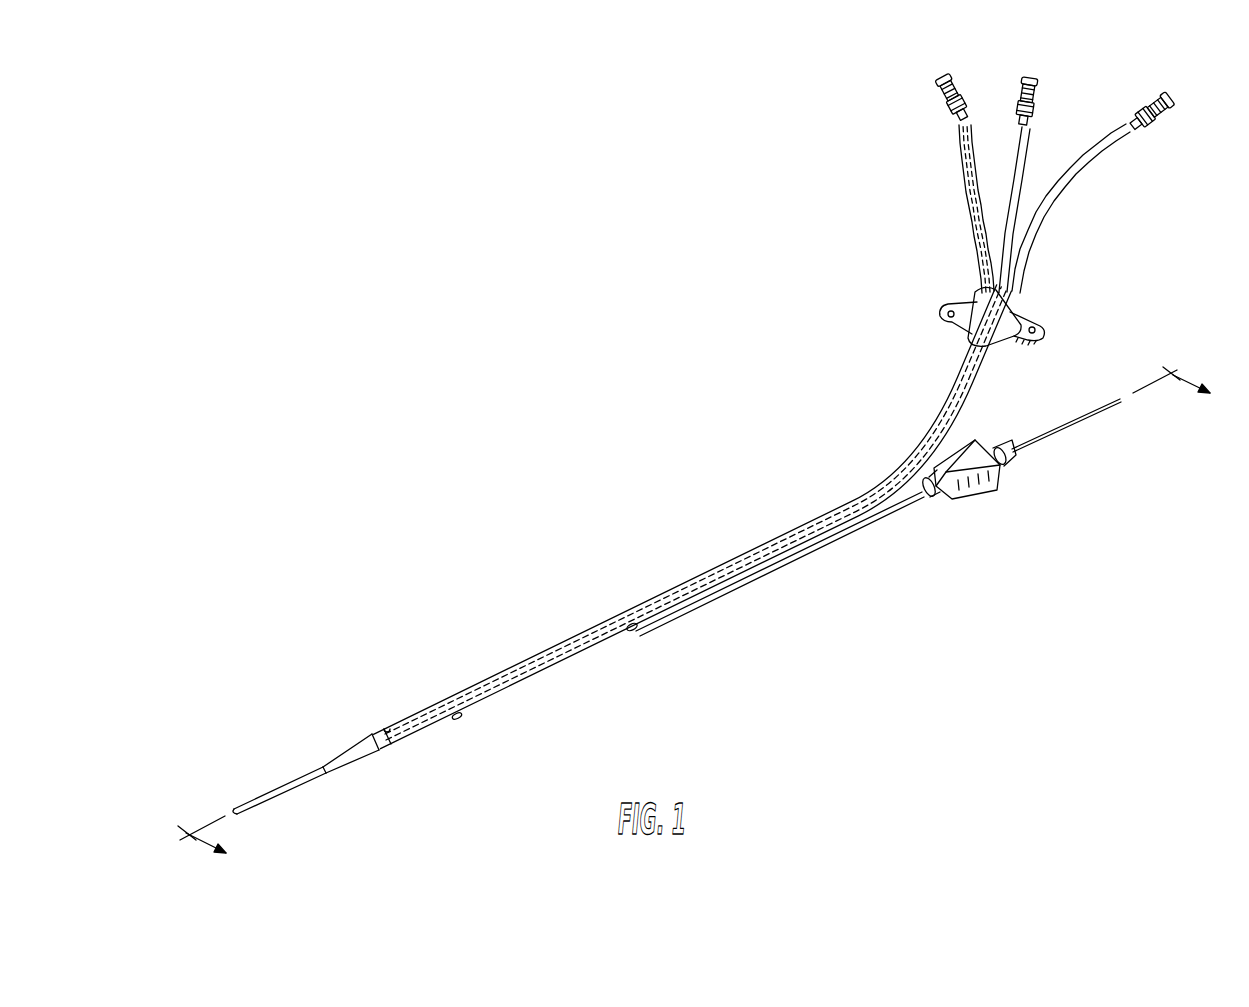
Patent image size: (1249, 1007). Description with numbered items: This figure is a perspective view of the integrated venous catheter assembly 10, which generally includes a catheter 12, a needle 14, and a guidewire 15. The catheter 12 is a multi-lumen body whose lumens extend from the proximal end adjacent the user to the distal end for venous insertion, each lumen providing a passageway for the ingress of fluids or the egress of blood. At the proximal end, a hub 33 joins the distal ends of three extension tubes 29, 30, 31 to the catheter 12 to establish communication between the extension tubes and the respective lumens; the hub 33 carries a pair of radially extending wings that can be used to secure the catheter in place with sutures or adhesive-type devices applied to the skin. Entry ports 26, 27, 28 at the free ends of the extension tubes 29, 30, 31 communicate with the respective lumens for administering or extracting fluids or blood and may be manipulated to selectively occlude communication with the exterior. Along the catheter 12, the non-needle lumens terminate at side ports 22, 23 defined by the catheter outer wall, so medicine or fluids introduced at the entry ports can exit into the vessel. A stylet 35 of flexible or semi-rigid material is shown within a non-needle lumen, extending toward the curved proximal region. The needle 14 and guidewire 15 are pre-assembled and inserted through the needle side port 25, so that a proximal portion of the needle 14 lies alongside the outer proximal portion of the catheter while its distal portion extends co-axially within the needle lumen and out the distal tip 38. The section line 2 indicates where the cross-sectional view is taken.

The venous catheter assembly 10 is at (666, 222).
The catheter 12 is at (670, 593).
The needle 14 is at (917, 497).
The guidewire 15 is at (1048, 430).
The side port 22 is at (388, 730).
The side port 23 is at (459, 719).
The needle side port 25 is at (636, 630).
The entry port 26 is at (939, 86).
The entry port 27 is at (1016, 102).
The entry port 28 is at (1148, 99).
The extension tube 29 is at (980, 203).
The extension tube 30 is at (1013, 167).
The extension tube 31 is at (1083, 171).
The hub 33 is at (1030, 320).
The stylet 35 is at (940, 403).
The distal tip 38 is at (323, 771).
The section line 2- 2 is at (704, 620).